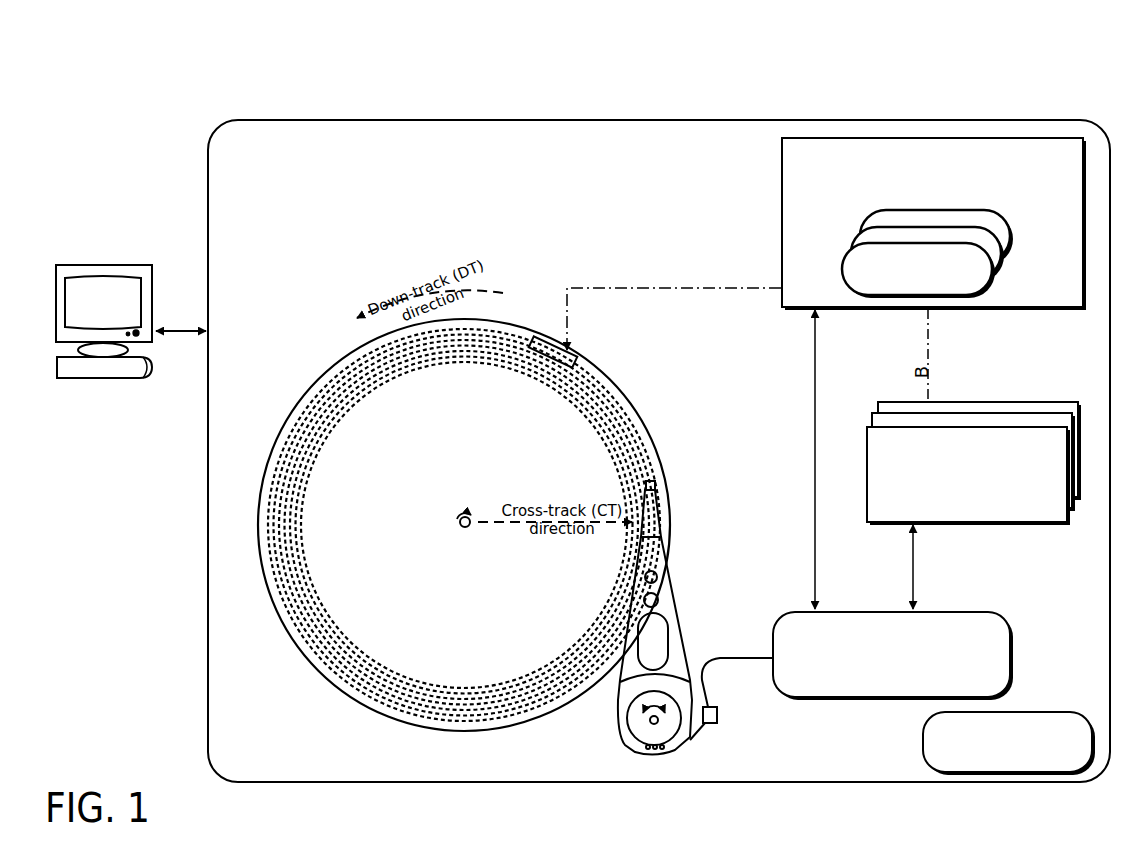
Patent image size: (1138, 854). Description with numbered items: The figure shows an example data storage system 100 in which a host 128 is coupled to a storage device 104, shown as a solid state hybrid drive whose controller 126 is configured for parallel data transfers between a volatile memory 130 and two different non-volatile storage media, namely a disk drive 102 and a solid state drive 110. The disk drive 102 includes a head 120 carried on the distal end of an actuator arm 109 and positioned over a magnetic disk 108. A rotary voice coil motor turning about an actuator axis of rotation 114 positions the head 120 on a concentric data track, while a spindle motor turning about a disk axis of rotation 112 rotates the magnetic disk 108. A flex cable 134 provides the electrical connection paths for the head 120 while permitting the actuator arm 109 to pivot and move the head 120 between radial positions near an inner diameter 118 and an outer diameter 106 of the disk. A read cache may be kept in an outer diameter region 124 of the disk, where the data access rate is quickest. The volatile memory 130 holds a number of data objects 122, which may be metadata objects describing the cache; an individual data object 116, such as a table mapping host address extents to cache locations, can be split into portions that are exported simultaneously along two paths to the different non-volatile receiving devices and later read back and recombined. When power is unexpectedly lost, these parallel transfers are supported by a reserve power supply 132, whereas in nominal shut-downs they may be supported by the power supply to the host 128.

The data storage system 100 is at (136, 83).
The disk drive 102 is at (302, 372).
The storage device 104 is at (659, 451).
The outer diameter 106 is at (612, 386).
The magnetic disk 108 is at (650, 426).
The actuator arm 109 is at (640, 648).
The solid state drive 110 is at (974, 463).
The disk axis of rotation 112 is at (459, 518).
The actuator axis of rotation 114 is at (650, 718).
The data object 116 is at (918, 270).
The inner diameter 118 is at (606, 414).
The head 120 is at (660, 483).
The data objects 122 is at (1012, 218).
The region 124 is at (575, 352).
The controller 126 is at (893, 656).
The host 128 is at (92, 265).
The volatile memory 130 is at (934, 224).
The reserve power supply 132 is at (1009, 743).
The flex cable 134 is at (690, 738).